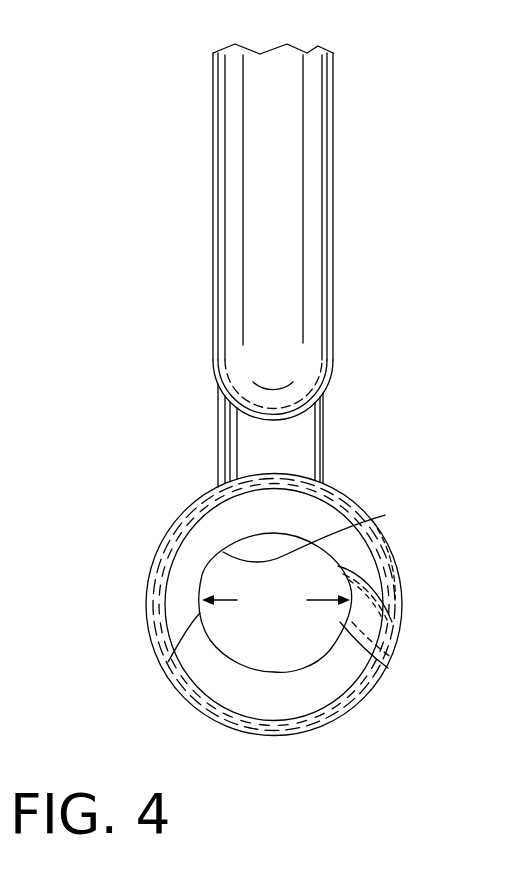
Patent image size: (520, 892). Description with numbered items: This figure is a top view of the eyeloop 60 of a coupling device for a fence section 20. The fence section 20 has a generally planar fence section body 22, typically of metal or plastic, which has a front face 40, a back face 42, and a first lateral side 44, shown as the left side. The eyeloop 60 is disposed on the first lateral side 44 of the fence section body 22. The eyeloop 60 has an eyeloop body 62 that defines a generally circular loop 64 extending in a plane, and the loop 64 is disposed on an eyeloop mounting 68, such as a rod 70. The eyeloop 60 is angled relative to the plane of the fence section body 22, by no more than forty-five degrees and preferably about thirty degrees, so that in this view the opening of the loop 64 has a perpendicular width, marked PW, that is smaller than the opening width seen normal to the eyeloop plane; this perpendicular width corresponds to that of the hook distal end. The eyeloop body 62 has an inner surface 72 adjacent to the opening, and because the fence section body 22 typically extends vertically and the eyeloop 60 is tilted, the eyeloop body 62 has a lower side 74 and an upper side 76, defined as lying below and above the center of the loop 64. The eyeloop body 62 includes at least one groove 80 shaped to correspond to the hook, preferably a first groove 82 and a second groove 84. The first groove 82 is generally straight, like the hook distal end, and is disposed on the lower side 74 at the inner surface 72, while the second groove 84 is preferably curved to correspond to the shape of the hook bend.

The fence section 20 is at (180, 121).
The fence section body 22 is at (243, 200).
The front face 40 is at (333, 262).
The back face 42 is at (213, 290).
The first lateral side 44 is at (330, 385).
The eyeloop 60 is at (110, 608).
The eyeloop body 62 is at (193, 520).
The loop 64 is at (388, 572).
The eyeloop mounting 68 is at (218, 447).
The rod 70 is at (300, 447).
The inner surface 72 is at (385, 515).
The lower side 74 is at (146, 582).
The upper side 76 is at (385, 548).
The groove 80 is at (406, 697).
The first groove 82 is at (168, 662).
The second groove 84 is at (383, 627).